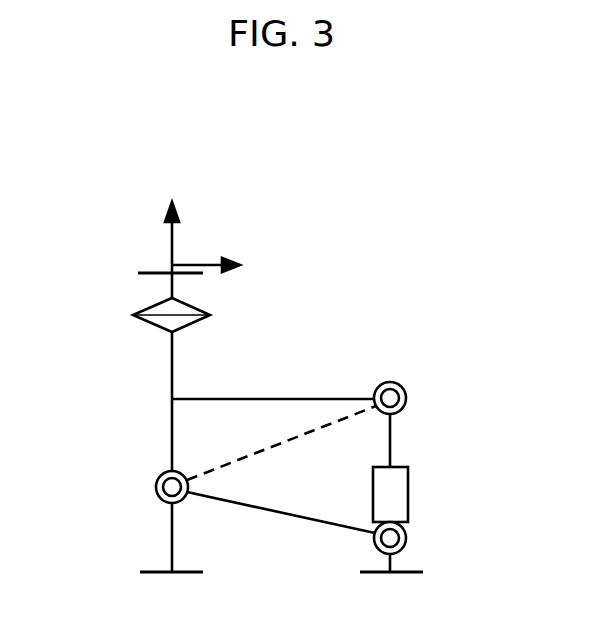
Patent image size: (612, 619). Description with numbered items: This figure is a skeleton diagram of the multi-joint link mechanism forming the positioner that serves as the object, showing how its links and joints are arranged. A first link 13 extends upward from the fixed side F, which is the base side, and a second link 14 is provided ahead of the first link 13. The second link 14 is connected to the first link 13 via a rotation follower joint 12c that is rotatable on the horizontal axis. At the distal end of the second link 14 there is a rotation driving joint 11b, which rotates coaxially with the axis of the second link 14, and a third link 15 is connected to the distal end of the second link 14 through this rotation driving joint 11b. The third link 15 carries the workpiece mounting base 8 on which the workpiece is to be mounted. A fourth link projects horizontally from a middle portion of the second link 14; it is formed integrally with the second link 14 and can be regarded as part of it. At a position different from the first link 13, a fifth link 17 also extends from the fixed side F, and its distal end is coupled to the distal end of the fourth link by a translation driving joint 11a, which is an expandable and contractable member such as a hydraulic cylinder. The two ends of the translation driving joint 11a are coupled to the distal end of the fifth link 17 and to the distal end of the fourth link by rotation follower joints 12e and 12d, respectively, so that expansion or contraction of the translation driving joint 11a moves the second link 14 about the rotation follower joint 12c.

The workpiece mounting base 8 is at (155, 272).
The third link 15 is at (166, 297).
The rotation driving joint 11b is at (157, 328).
The second link 14 is at (171, 402).
The rotation follower joint 12c is at (157, 478).
The rotation follower joint 12d is at (401, 384).
The rotation follower joint 12e is at (406, 536).
The translation driving joint 11a is at (408, 480).
The first link 13 is at (171, 525).
The fifth link 17 is at (400, 571).
The fixed side F is at (156, 572).